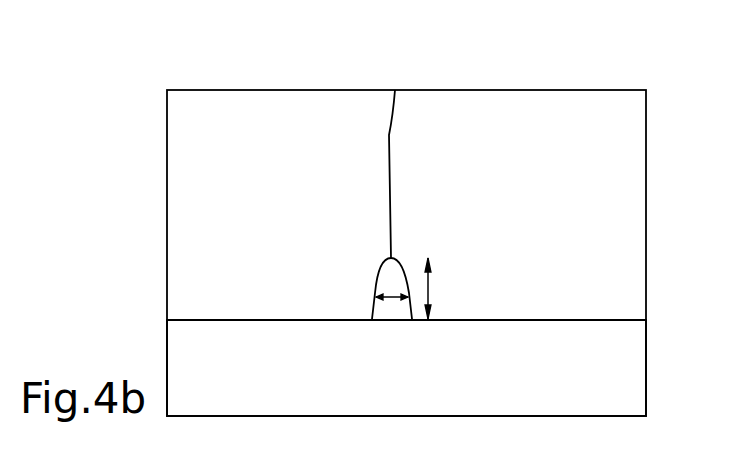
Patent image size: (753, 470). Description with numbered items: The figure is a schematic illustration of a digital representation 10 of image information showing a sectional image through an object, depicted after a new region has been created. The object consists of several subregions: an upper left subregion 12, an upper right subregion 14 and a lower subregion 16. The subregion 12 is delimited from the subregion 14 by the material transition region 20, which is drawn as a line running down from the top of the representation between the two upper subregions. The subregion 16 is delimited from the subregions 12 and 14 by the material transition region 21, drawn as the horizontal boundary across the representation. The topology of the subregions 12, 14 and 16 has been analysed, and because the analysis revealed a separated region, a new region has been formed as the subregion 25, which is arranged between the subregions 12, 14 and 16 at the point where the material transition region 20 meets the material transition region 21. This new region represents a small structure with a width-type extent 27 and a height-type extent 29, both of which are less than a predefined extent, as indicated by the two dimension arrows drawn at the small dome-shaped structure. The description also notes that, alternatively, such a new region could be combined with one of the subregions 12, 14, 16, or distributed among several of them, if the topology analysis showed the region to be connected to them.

The digital representation 10 is at (647, 160).
The subregion 12 is at (297, 108).
The subregion 14 is at (513, 107).
The subregion 16 is at (418, 395).
The material transition region 20 is at (391, 119).
The material transition region 21 is at (597, 320).
The subregion 25 is at (375, 315).
The extent 27 is at (392, 294).
The extent 29 is at (430, 291).